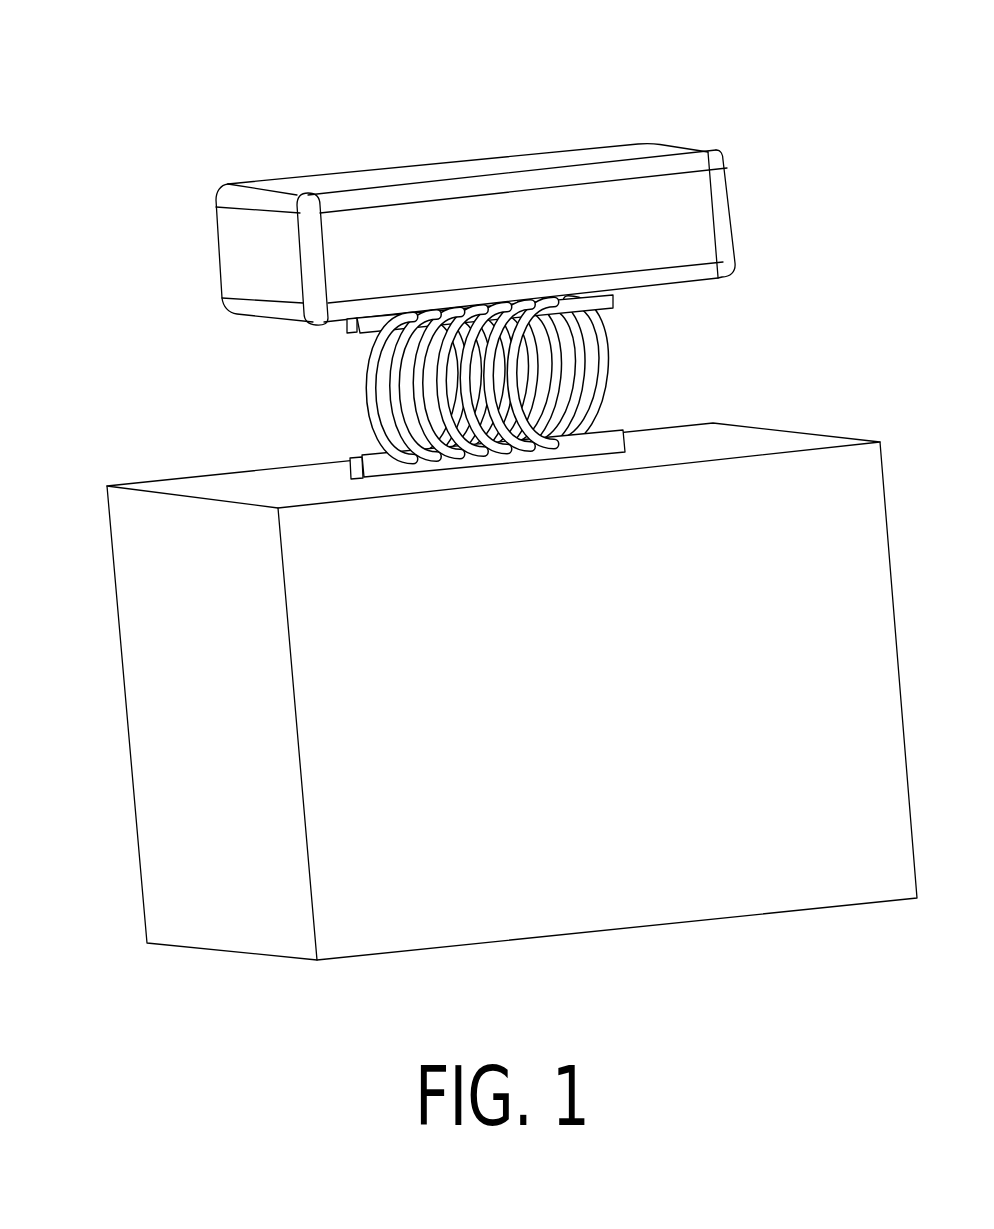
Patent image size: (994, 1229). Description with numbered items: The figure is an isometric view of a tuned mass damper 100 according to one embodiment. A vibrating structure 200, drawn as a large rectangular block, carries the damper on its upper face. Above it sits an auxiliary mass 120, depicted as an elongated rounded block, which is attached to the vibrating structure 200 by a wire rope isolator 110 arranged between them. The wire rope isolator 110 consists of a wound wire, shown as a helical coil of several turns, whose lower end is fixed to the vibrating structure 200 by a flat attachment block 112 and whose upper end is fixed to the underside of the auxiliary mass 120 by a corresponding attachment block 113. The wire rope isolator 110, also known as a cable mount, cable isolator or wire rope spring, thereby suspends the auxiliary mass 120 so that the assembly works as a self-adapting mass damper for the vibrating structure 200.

The tuned mass damper 100 is at (467, 239).
The wire rope isolator 110 is at (530, 328).
The attachment block 112 is at (360, 468).
The attachment block 113 is at (347, 330).
The auxiliary mass 120 is at (723, 195).
The vibrating structure 200 is at (625, 718).